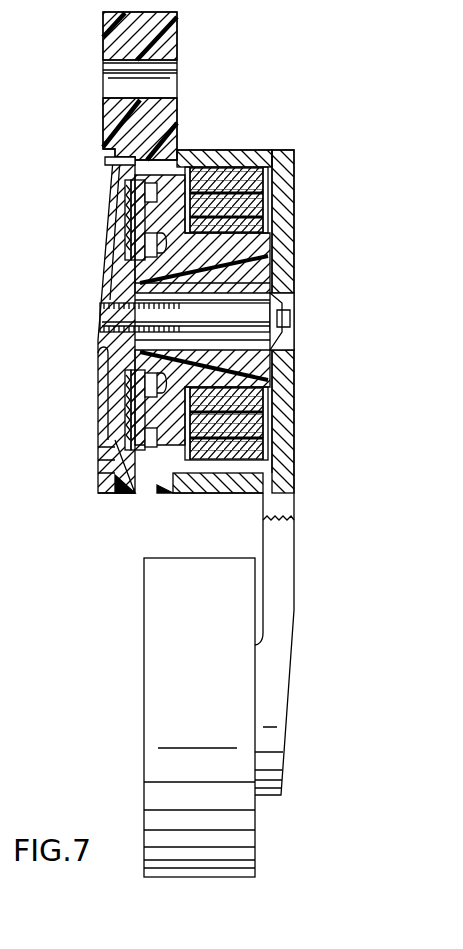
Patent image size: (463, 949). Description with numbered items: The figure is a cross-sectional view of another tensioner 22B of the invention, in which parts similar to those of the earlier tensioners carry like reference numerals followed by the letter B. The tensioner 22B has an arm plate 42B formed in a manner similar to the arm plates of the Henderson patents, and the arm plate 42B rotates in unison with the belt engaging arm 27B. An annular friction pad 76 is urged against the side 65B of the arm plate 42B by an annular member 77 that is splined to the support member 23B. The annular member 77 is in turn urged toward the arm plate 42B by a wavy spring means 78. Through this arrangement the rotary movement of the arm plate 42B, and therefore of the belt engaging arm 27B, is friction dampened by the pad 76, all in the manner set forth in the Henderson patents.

The tensioner 22B is at (283, 95).
The support member 23B is at (103, 128).
The belt engaging arm 27B is at (283, 537).
The arm plate 42B is at (113, 382).
The side of the arm plate 65B is at (128, 245).
The annular friction pad 76 is at (127, 215).
The annular member 77 is at (128, 440).
The wavy spring means 78 is at (187, 152).